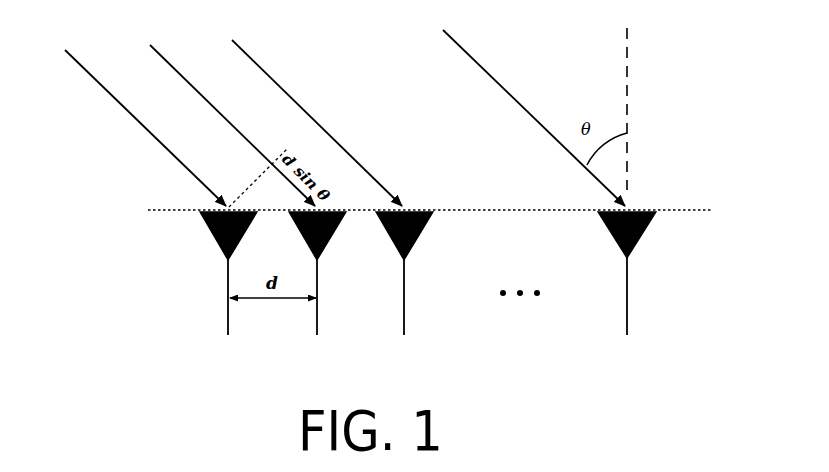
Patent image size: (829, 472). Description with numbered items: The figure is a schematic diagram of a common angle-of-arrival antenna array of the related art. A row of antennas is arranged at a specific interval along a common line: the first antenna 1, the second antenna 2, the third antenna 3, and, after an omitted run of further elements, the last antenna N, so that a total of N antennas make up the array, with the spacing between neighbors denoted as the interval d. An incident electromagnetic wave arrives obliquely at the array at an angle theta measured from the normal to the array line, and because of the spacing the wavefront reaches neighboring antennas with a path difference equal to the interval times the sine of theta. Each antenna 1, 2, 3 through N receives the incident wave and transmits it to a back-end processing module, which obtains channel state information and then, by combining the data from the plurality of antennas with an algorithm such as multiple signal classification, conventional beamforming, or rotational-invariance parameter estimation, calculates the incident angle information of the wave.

The antenna 1 is at (228, 286).
The antenna 2 is at (317, 286).
The antenna 3 is at (404, 286).
The antenna N is at (627, 286).